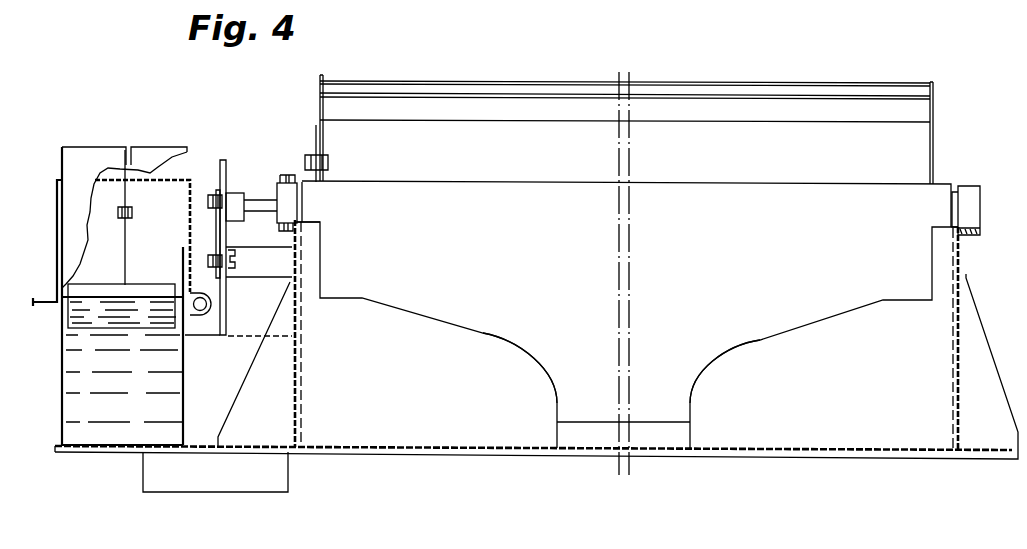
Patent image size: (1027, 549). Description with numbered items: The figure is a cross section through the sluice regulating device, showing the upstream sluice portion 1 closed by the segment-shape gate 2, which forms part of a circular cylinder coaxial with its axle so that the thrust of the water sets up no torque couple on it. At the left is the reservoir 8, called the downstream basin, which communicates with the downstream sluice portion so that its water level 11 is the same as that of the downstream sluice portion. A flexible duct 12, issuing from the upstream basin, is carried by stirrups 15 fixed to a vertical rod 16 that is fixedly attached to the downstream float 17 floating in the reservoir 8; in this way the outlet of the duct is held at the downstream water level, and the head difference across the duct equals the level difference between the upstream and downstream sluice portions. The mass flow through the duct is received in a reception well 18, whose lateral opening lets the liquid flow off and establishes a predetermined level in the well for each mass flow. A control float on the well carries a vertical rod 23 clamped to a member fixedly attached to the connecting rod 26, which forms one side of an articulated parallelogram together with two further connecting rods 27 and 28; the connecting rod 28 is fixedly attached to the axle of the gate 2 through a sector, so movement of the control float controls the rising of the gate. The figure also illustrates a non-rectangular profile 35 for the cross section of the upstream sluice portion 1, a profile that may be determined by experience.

The upstream sluice portion 1 is at (626, 273).
The segment-shape gate 2 is at (406, 182).
The reservoir (downstream basin) 8 is at (62, 337).
The water level 11 is at (150, 297).
The flexible duct 12 is at (202, 315).
The stirrups 15 is at (173, 181).
The vertical rod 16 is at (126, 235).
The downstream float 17 is at (94, 284).
The reception well 18 is at (226, 337).
The vertical rod 23 is at (228, 302).
The connecting rod 26 is at (233, 238).
The connecting rod 27 is at (230, 277).
The connecting rod 28 is at (233, 194).
The non-rectangular profile 35 is at (491, 334).